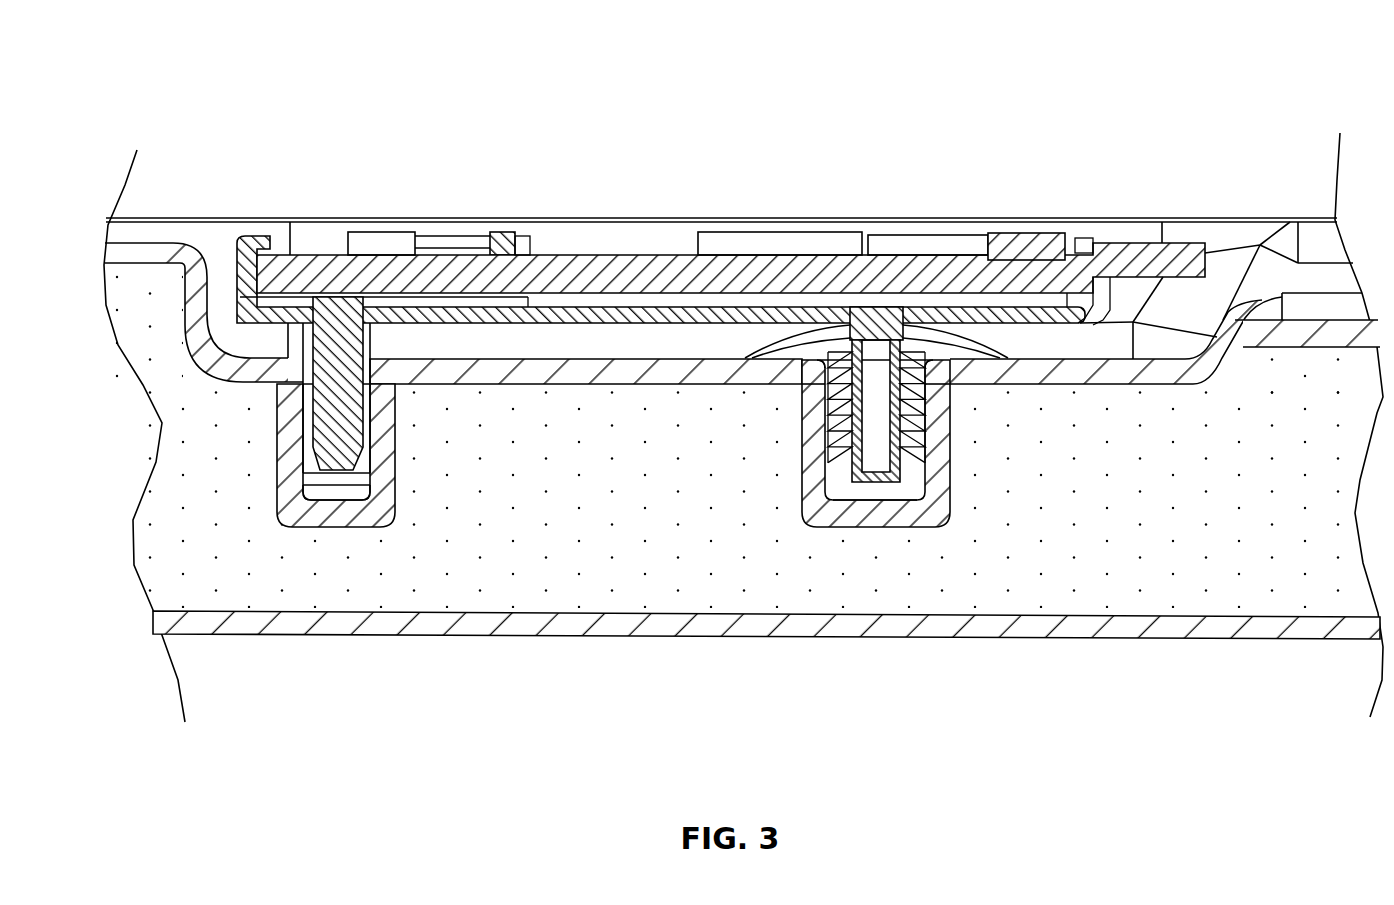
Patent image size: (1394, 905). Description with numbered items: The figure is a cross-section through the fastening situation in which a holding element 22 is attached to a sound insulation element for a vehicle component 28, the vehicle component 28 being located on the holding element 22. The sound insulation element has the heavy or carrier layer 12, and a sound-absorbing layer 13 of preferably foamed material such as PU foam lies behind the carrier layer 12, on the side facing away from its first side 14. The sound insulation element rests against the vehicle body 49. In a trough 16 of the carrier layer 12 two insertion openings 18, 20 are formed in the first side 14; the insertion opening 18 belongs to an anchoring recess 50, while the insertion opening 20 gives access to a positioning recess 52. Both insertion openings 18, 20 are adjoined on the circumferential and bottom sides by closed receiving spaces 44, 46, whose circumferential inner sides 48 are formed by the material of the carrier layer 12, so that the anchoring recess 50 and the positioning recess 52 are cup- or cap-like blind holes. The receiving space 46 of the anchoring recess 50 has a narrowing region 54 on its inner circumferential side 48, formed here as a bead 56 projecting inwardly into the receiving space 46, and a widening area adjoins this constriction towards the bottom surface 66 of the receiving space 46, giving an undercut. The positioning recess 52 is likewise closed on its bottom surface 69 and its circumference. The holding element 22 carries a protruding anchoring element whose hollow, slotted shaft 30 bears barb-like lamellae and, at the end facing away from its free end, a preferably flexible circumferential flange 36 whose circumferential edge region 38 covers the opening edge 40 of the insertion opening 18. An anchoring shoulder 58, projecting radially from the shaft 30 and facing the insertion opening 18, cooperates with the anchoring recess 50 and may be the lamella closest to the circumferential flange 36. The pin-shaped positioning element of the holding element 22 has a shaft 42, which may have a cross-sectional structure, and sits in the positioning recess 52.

The carrier layer 12 is at (721, 131).
The sound-absorbing layer 13 is at (1230, 499).
The first side 14 is at (191, 157).
The trough 16 is at (257, 216).
The insertion opening 18 is at (910, 274).
The insertion opening 20 is at (375, 259).
The holding element 22 is at (661, 187).
The vehicle component 28 is at (731, 183).
The shaft 30 is at (834, 564).
The circumferential flange 36 is at (1116, 536).
The circumferential edge region 38 is at (977, 214).
The opening edge 40 is at (586, 567).
The shaft 42 is at (350, 561).
The receiving space 44 is at (422, 558).
The receiving space 46 is at (945, 564).
The circumferential inner side 48 is at (552, 578).
The vehicle body 49 is at (766, 698).
The anchoring recess 50 is at (988, 580).
The positioning recess 52 is at (719, 498).
The narrowing region 54 is at (957, 568).
The bead 56 is at (1027, 164).
The anchoring shoulder 58 is at (699, 579).
The bottom surface 66 is at (880, 628).
The bottom surface 69 is at (305, 643).